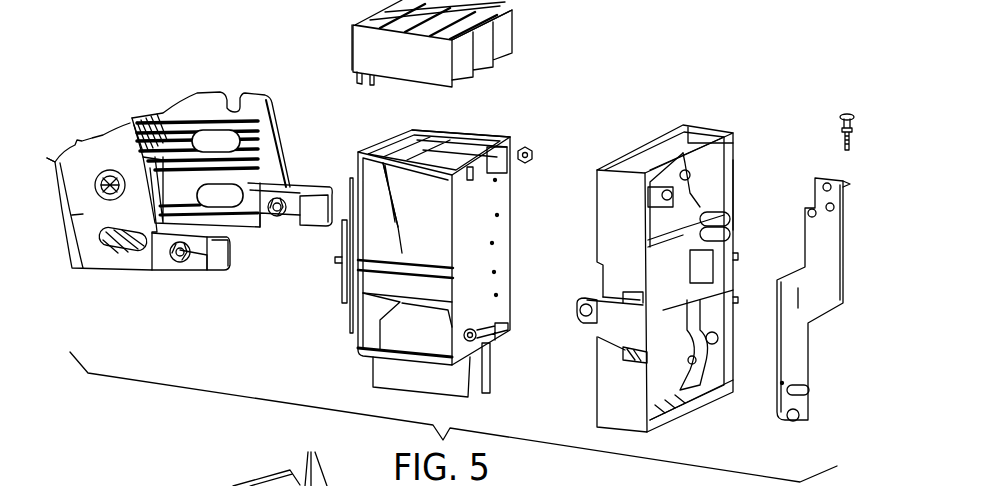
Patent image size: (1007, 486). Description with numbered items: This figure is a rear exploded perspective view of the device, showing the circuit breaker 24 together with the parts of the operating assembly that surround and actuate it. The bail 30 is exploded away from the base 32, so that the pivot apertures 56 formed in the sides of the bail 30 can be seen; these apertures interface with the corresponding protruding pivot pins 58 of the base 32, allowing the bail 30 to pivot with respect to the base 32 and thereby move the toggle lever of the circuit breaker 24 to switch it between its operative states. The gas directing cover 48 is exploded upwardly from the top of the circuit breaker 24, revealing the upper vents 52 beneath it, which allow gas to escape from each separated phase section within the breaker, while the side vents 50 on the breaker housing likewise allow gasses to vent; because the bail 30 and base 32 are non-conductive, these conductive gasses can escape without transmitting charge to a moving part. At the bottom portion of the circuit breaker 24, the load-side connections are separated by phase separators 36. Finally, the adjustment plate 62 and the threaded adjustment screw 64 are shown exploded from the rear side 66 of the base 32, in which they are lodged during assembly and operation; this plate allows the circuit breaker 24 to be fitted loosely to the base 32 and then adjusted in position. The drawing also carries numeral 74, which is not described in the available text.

The circuit breaker 24 is at (332, 326).
The bail 30 is at (112, 258).
The base 32 is at (617, 398).
The phase separators 36 is at (455, 385).
The gas directing cover 48 is at (408, 67).
The side vents 50 is at (416, 235).
The upper vents 52 is at (383, 143).
The pivot aperture 56 is at (278, 220).
The pivot pins 58 is at (583, 317).
The adjustment plate 62 is at (827, 272).
The threaded adjustment screw 64 is at (840, 122).
The rear side 66 is at (748, 213).
The support 74 is at (280, 456).